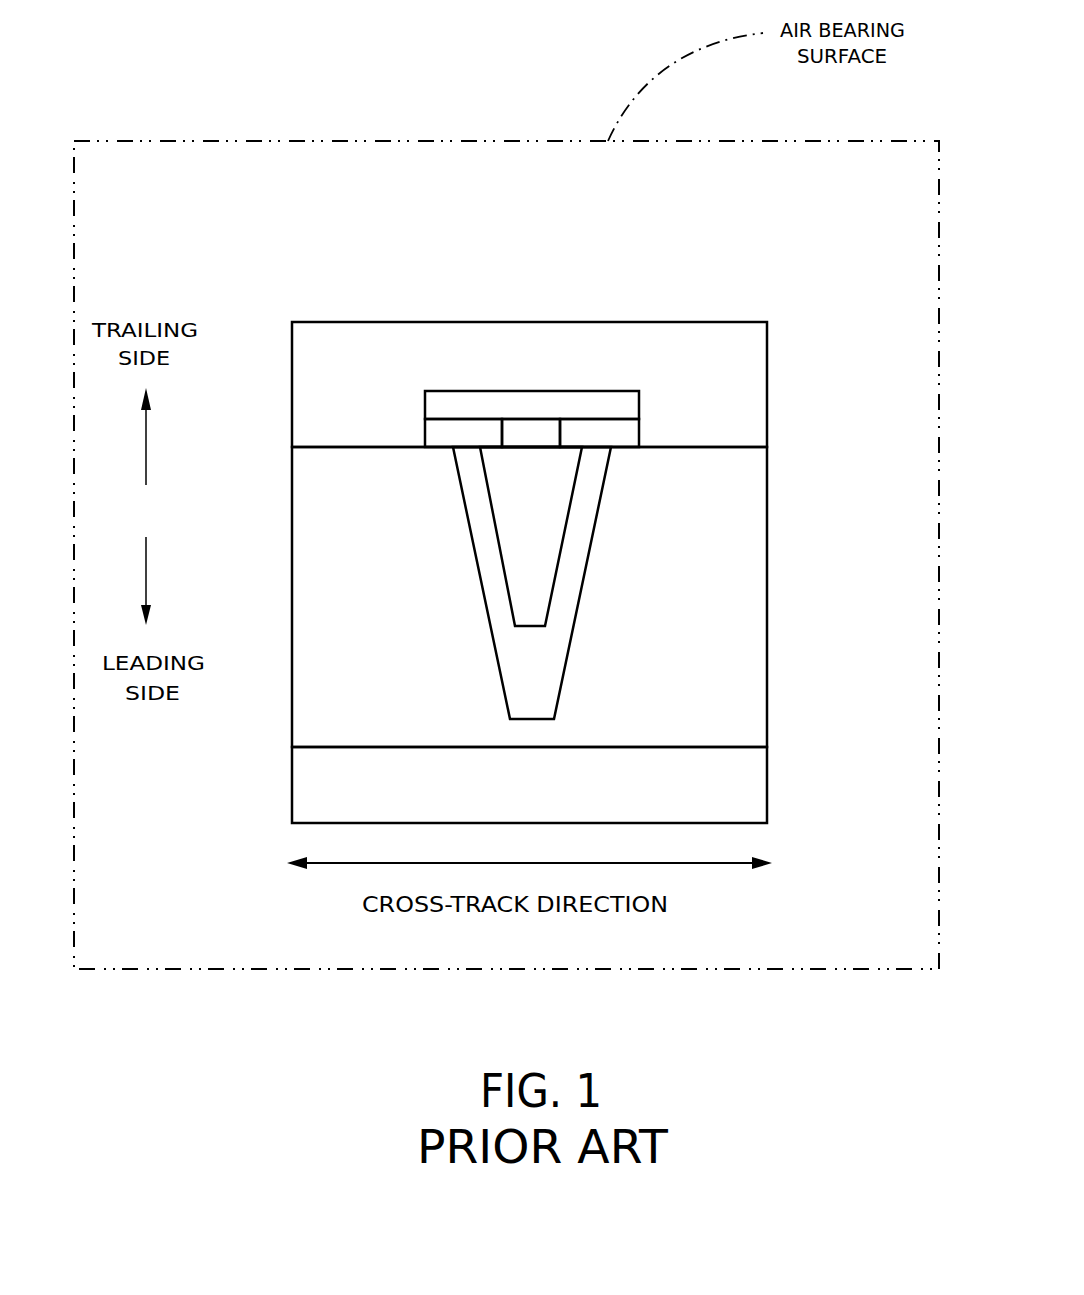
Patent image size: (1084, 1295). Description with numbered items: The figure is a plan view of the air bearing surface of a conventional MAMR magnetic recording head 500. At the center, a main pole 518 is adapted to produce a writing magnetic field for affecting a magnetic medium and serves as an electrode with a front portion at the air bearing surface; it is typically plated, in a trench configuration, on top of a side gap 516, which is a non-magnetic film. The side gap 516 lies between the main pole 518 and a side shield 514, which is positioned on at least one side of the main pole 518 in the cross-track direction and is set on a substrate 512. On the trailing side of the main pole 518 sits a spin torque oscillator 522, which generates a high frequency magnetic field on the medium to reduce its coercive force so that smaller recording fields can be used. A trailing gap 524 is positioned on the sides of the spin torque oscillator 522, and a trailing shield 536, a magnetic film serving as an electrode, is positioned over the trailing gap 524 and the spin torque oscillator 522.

The MAMR magnetic recording head 500 is at (321, 68).
The substrate 512 is at (529, 785).
The side shield 514 is at (529, 597).
The side gap 516 is at (532, 583).
The main pole 518 is at (531, 536).
The spin torque oscillator 522 is at (531, 433).
The trailing gap 524 is at (438, 431).
The trailing shield 536 is at (599, 409).